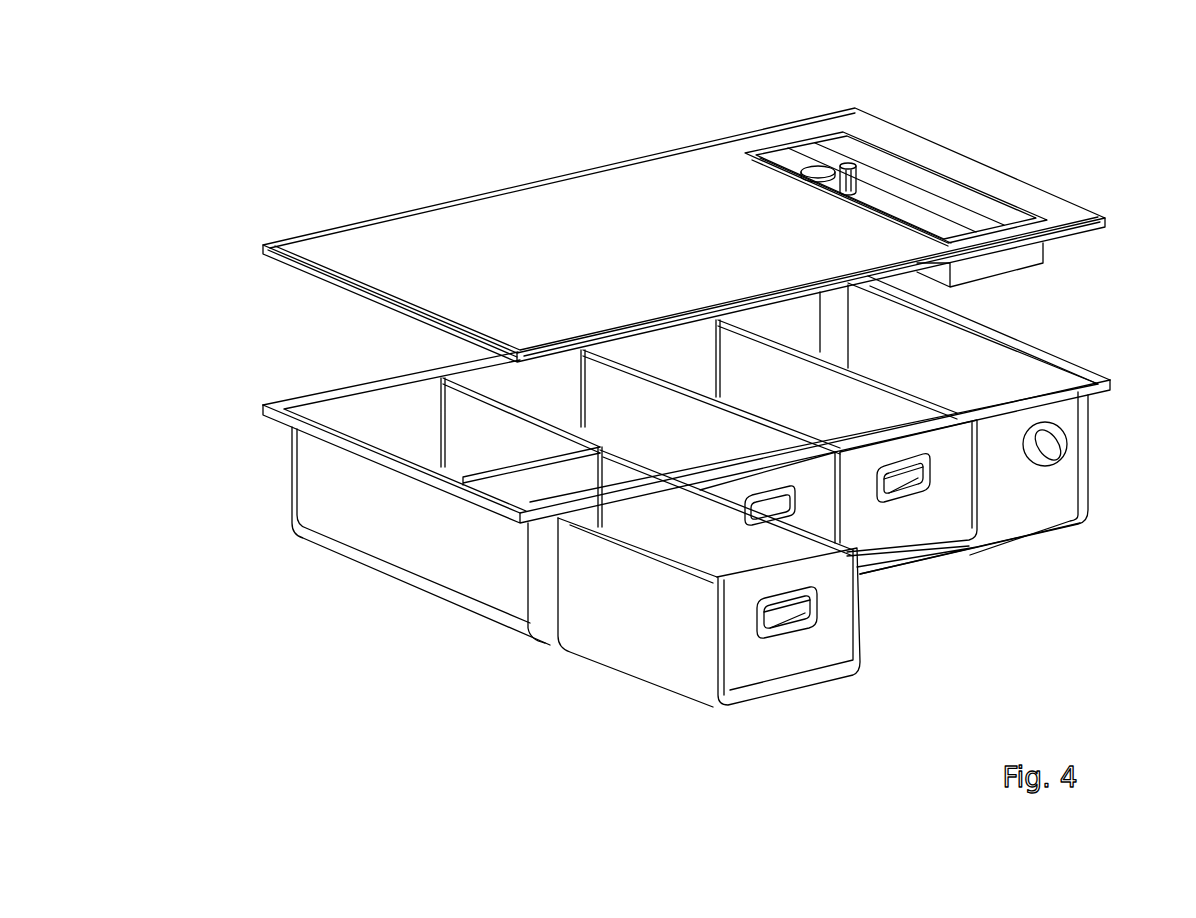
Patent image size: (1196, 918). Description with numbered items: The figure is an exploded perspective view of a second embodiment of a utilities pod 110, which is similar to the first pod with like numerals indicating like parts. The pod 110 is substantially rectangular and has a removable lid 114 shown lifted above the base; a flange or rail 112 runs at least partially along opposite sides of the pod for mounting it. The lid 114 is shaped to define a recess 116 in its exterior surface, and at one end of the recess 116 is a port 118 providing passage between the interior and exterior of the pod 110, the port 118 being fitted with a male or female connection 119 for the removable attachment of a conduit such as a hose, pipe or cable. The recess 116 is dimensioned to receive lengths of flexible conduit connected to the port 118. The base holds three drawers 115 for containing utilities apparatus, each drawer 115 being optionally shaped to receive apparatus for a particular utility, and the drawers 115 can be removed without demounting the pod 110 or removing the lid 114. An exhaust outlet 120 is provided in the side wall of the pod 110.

The pod 110 is at (616, 150).
The flange or rail 112 is at (277, 420).
The lid 114 is at (630, 269).
The drawers 115 is at (630, 645).
The recess 116 is at (918, 208).
The port 118 is at (852, 168).
The male or female connection 119 is at (851, 168).
The exhaust outlet 120 is at (1057, 458).